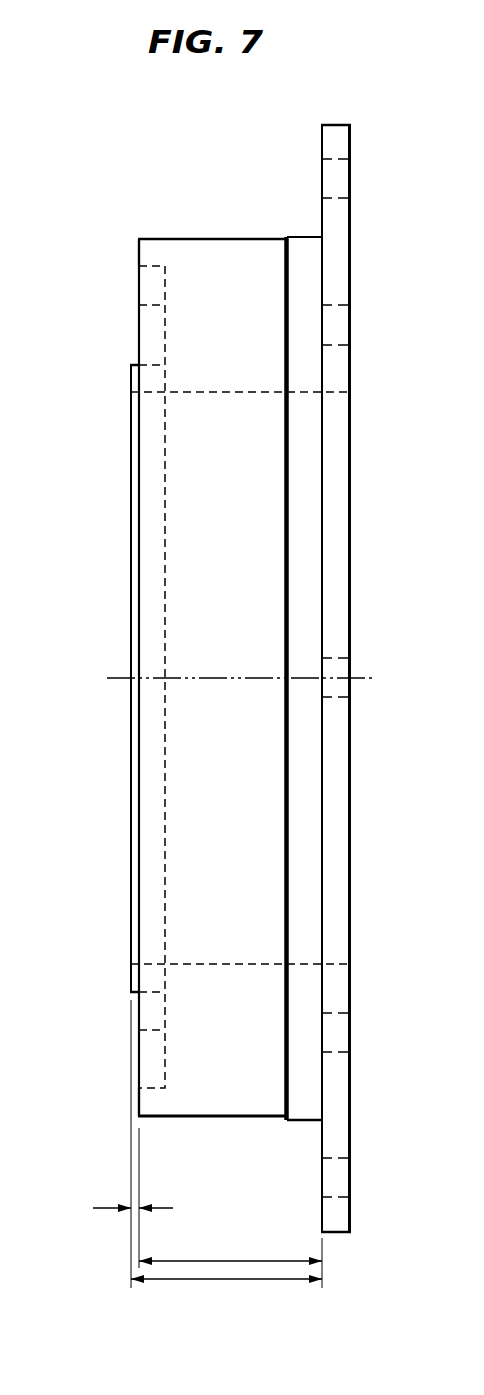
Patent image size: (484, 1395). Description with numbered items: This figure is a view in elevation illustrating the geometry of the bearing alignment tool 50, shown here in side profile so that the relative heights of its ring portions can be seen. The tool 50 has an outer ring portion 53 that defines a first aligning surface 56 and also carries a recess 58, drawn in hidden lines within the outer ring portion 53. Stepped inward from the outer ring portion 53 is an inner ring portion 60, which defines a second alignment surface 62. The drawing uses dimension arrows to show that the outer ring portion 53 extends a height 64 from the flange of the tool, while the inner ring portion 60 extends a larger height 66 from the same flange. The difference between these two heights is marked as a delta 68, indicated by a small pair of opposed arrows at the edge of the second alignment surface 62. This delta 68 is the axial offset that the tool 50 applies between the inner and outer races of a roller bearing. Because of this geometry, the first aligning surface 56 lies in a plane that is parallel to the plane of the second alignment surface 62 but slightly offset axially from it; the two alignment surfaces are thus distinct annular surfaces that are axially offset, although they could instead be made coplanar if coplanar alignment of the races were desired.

The bearing alignment tool 50 is at (178, 163).
The outer ring portion 53 is at (240, 239).
The first aligning surface 56 is at (139, 252).
The recess 58 is at (139, 305).
The inner ring portion 60 is at (182, 392).
The second alignment surface 62 is at (131, 378).
The height 64 is at (255, 1259).
The height 66 is at (168, 1282).
The delta 68 is at (98, 1208).